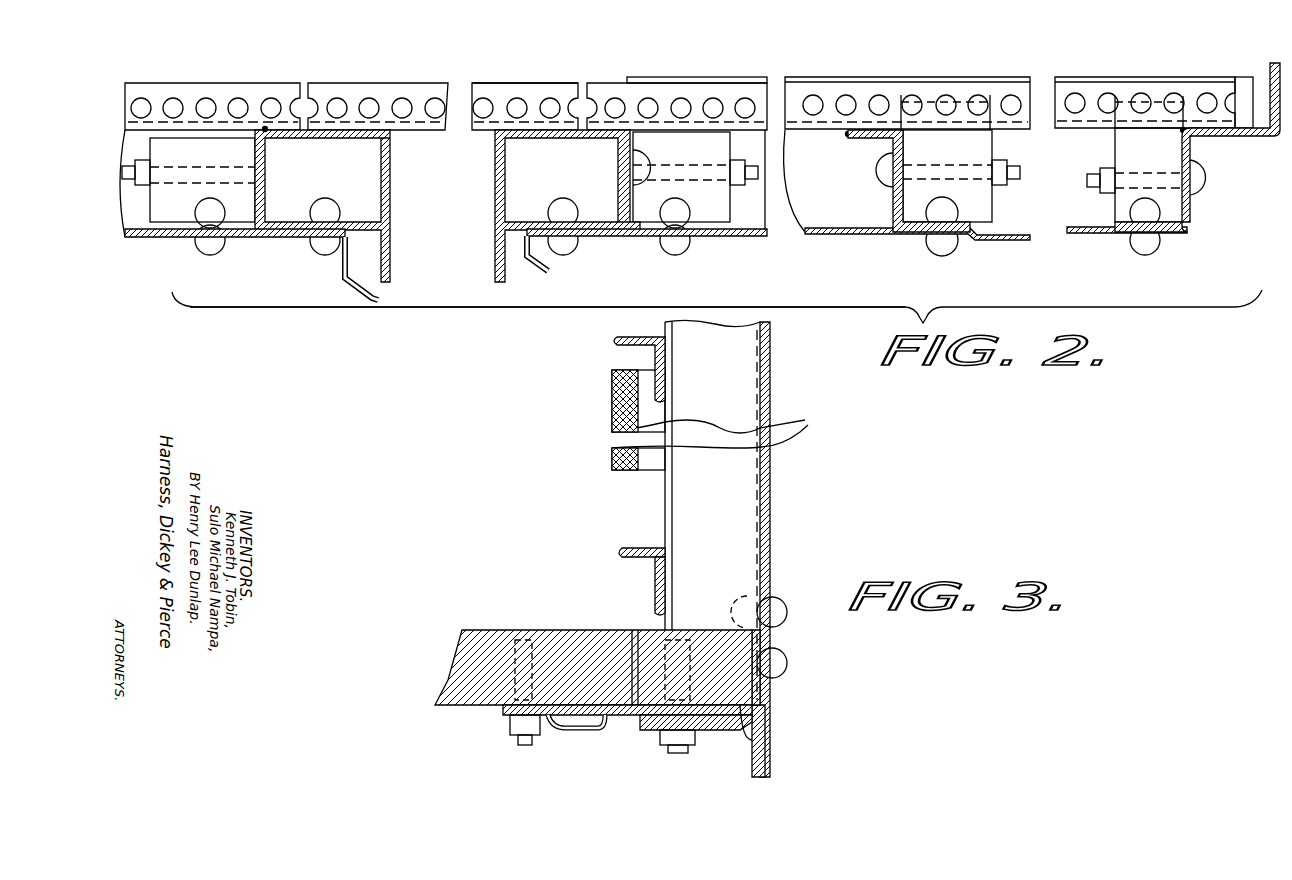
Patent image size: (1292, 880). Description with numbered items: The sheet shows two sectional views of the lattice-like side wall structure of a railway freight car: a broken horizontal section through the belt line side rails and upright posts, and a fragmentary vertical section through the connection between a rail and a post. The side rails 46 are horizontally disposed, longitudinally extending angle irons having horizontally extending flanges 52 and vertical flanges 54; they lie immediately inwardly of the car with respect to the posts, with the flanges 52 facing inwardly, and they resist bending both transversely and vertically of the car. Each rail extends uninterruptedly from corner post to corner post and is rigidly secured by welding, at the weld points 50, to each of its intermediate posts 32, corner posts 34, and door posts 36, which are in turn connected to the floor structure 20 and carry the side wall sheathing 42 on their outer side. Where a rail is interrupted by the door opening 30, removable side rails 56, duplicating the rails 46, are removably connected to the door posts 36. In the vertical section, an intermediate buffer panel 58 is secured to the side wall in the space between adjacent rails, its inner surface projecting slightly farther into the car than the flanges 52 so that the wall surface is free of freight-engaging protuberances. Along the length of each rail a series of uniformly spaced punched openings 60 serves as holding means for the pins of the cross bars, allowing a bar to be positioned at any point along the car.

In FIG. 3, the floor structure 20 is at (495, 632).
In FIG. 2, the door opening 30 is at (470, 237).
In FIG. 2, the intermediate posts 32 is at (893, 195).
In FIG. 3, the intermediate posts 32 is at (668, 418).
In FIG. 2, the corner posts 34 is at (1190, 160).
In FIG. 2, the door posts 36 is at (345, 155).
In FIG. 2, the side wall sheathing 42 is at (255, 238).
In FIG. 3, the side wall sheathing 42 is at (805, 422).
In FIG. 2, the side rails 46 is at (185, 90).
In FIG. 3, the side rails 46 is at (667, 555).
In FIG. 2, the weld points 50 is at (265, 128).
In FIG. 3, the horizontally extending flanges 52 is at (622, 545).
In FIG. 3, the vertical flanges 54 is at (667, 582).
In FIG. 2, the removable side rails 56 is at (500, 88).
In FIG. 3, the buffer panels 58 is at (612, 400).
In FIG. 2, the punched openings 60 is at (212, 100).